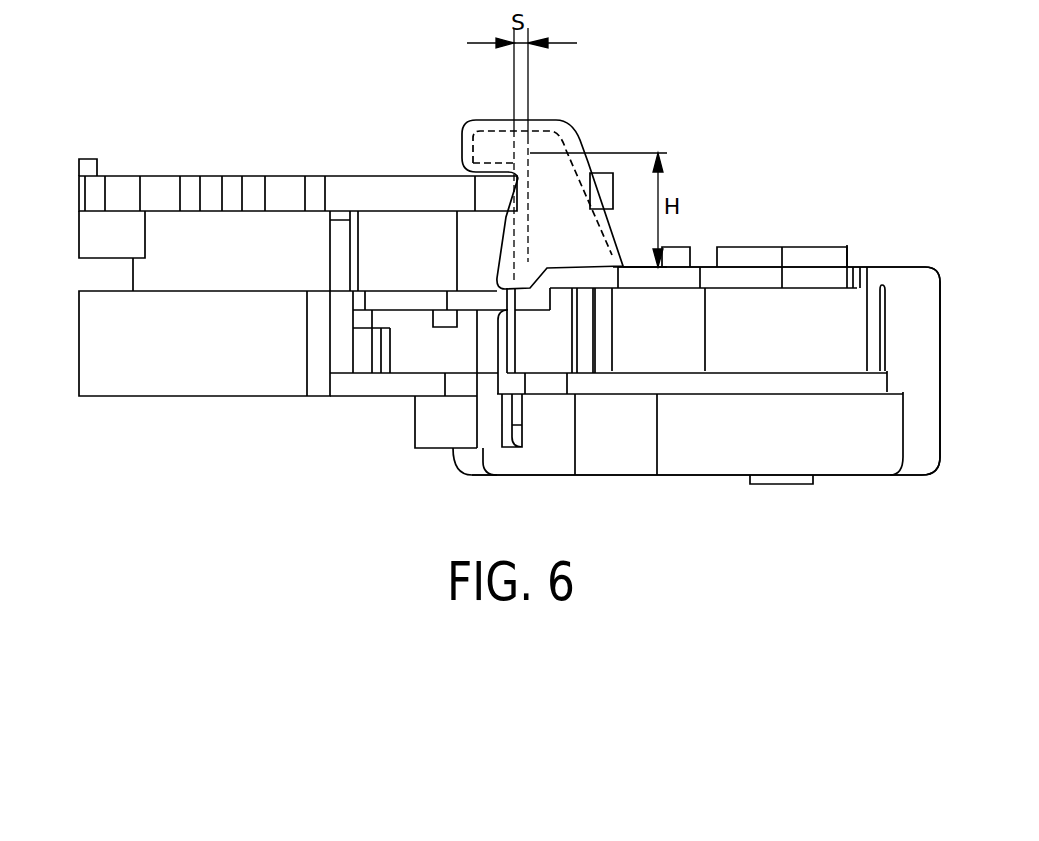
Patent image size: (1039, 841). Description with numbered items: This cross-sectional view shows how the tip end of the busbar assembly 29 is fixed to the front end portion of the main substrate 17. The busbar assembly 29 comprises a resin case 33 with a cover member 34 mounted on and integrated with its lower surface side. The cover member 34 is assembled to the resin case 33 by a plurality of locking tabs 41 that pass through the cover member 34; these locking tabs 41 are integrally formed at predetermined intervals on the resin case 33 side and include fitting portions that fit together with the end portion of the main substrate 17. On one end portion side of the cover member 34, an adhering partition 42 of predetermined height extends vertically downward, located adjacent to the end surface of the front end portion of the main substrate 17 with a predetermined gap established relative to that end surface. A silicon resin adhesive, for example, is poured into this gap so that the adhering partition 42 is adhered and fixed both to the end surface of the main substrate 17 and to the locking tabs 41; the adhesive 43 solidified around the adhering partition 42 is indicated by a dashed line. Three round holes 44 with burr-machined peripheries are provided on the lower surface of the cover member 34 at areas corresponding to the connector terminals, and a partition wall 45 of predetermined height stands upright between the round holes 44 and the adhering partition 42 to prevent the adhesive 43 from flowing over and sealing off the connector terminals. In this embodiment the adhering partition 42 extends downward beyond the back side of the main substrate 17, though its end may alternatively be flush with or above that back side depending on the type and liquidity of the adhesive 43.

The main substrate 17 is at (213, 175).
The busbar assembly 29 is at (942, 321).
The resin case 33 is at (243, 375).
The cover member 34 is at (750, 274).
The locking tabs 41 is at (583, 138).
The adhering partition 42 is at (558, 127).
The adhesive 43 is at (470, 128).
The round holes 44 is at (822, 245).
The partition wall 45 is at (693, 256).